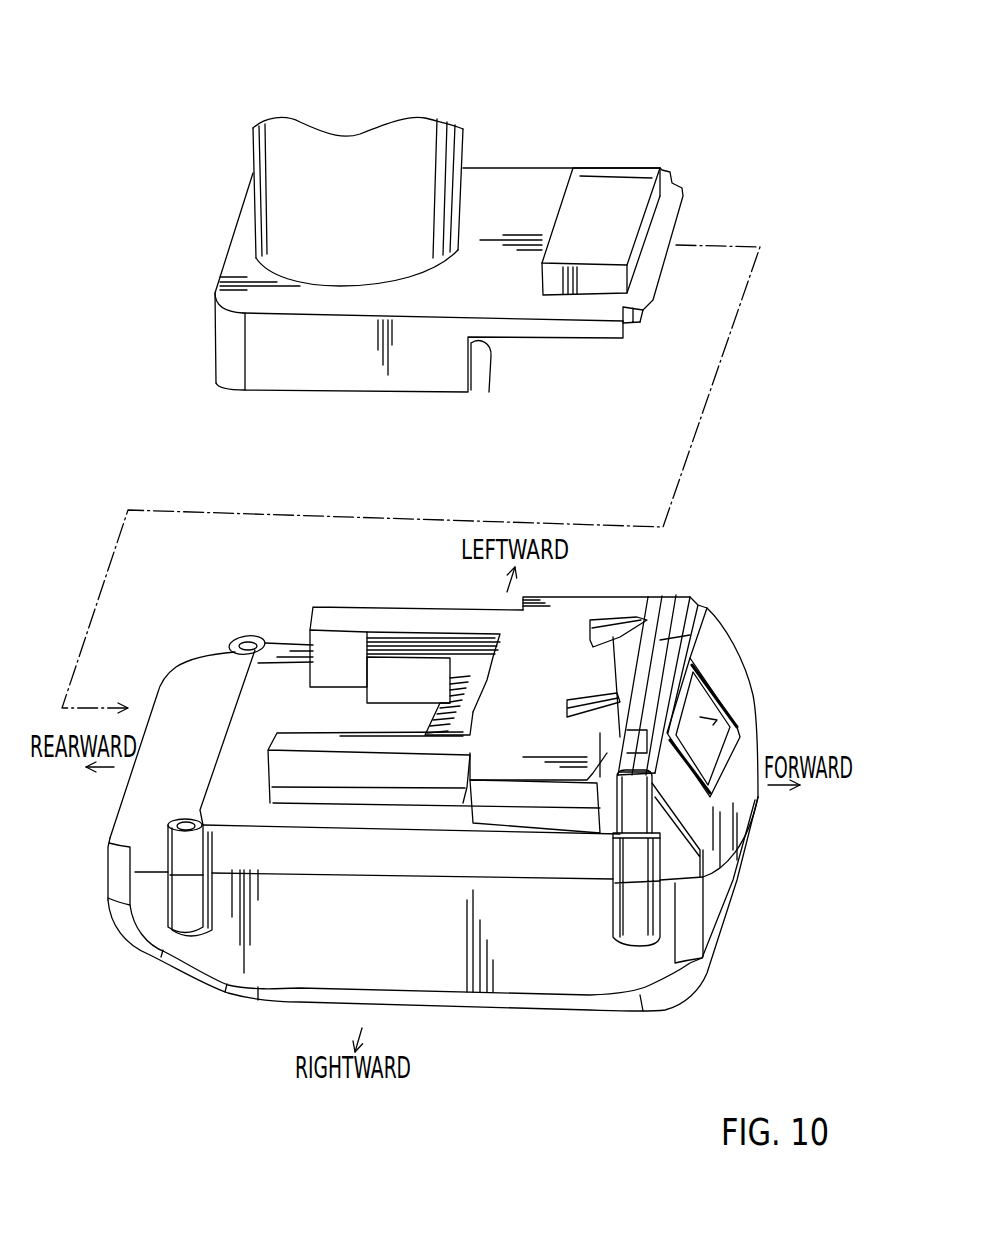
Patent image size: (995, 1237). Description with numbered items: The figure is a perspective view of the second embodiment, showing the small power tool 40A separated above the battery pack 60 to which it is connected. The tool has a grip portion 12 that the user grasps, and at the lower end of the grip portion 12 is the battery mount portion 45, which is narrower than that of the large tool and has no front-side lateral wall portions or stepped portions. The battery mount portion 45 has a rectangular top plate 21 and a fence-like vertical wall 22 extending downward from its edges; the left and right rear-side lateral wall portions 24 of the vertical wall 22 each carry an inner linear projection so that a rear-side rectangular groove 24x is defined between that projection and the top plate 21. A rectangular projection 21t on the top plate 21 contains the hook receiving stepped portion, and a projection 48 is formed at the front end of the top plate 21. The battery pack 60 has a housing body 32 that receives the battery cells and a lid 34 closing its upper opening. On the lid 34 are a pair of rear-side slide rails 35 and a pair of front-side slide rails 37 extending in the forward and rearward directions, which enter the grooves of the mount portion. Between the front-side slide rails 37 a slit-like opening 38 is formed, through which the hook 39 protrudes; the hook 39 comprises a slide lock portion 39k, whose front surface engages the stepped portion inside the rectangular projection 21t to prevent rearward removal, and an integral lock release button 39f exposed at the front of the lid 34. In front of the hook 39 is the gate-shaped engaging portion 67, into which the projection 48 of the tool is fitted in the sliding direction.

The small power tool 40A is at (421, 62).
The grip portion 12 is at (344, 190).
The vertical wall 22 is at (214, 387).
The rear-side lateral wall portion 24 is at (478, 180).
The rear-side rectangular groove 24x is at (483, 354).
The battery mount portion 45 is at (503, 200).
The top plate 21 is at (527, 224).
The rectangular projection 21t is at (605, 215).
The projection 48 is at (657, 240).
The battery pack 60 is at (730, 577).
The housing body 32 is at (577, 940).
The rear-side slide rail 35 is at (393, 608).
The front-side slide rail 37 is at (580, 606).
The slit-like opening 38 is at (593, 725).
The slide lock portion 39k is at (640, 672).
The lid 34 is at (696, 594).
The gate-shaped engaging portion 67 is at (673, 640).
The hook 39 is at (690, 672).
The lock release button 39f is at (697, 720).